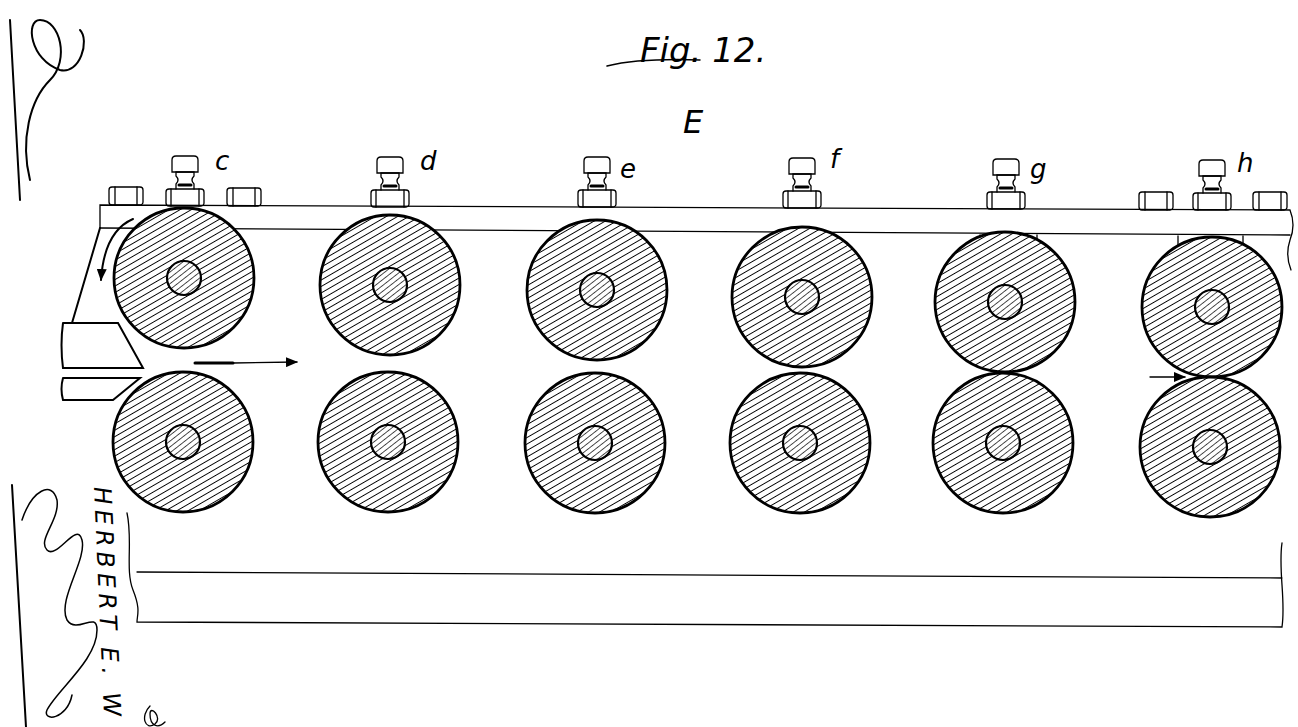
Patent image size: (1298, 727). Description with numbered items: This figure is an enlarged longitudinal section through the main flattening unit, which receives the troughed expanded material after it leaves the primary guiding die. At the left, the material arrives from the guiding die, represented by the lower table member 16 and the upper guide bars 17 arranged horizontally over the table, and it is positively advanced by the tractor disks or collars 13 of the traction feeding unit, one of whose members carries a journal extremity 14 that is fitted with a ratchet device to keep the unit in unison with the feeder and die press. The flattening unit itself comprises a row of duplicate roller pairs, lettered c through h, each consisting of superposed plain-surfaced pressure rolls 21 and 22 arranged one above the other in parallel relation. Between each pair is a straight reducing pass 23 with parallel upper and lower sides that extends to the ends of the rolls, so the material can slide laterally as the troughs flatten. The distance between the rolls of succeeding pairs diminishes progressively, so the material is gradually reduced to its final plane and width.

The tractor disks or collars 13 is at (187, 148).
The journal extremity 14 is at (1142, 117).
The lower table member 16 is at (101, 390).
The upper guide bars 17 is at (103, 345).
The upper pressure roll 21 is at (243, 268).
The lower pressure roll 22 is at (233, 405).
The straight reducing pass 23 is at (202, 353).